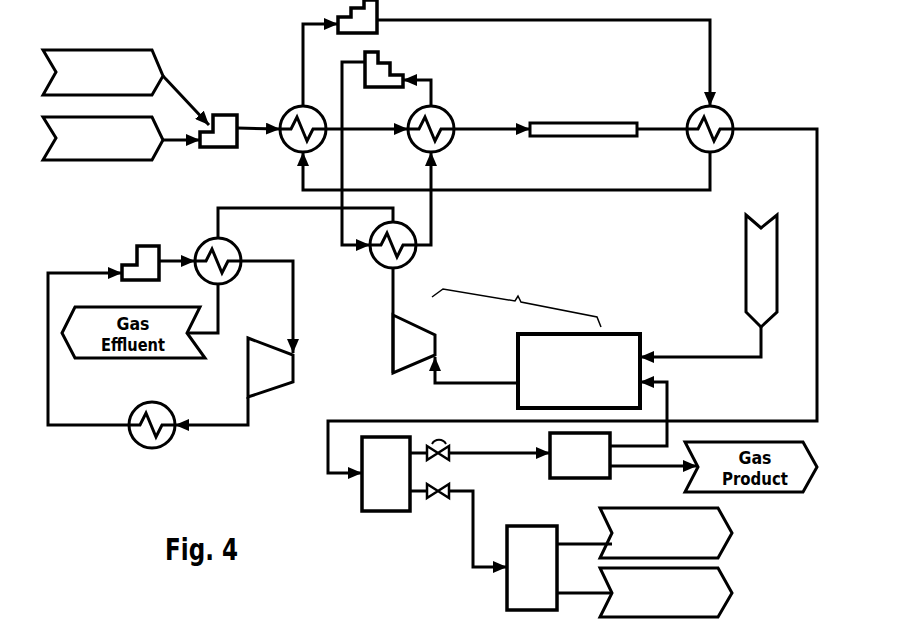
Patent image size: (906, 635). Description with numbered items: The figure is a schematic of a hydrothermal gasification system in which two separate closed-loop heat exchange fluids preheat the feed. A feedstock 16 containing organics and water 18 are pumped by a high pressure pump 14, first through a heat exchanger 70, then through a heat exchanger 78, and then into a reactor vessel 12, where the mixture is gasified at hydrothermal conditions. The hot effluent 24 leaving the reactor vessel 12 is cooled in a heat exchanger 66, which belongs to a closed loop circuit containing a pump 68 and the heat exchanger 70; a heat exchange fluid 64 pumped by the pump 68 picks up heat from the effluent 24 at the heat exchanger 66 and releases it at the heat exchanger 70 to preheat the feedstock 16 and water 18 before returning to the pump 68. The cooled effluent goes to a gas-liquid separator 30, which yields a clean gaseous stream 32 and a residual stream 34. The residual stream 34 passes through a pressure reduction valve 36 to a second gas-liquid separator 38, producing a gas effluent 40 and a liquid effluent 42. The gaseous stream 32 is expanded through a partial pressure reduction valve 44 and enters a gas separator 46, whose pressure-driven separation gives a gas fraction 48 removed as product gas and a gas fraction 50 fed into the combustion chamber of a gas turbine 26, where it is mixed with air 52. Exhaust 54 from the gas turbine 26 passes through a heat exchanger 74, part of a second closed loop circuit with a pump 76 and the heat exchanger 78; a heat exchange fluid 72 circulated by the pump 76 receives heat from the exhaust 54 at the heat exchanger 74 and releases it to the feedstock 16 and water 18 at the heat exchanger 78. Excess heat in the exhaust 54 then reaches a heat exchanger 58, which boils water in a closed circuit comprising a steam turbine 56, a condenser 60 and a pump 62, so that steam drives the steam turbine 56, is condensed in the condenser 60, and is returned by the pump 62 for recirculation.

The reactor vessel 12 is at (562, 122).
The high pressure pump 14 is at (210, 113).
The feedstock 16 is at (87, 85).
The water 18 is at (87, 150).
The effluent 24 is at (800, 128).
The gas turbine 26 is at (536, 339).
The gas-liquid separator 30 is at (362, 496).
The gaseous stream 32 is at (419, 452).
The residual stream 34 is at (420, 500).
The pressure reduction valve 36 is at (450, 500).
The gas-liquid separator 38 is at (507, 594).
The gas effluent 40 is at (735, 527).
The liquid effluent 42 is at (736, 598).
The partial pressure reduction valve 44 is at (450, 460).
The gas separator 46 is at (567, 468).
The gas fraction 48 is at (658, 470).
The gas fraction 50 is at (669, 404).
The air 52 is at (745, 272).
The exhaust 54 is at (392, 300).
The steam turbine 56 is at (280, 380).
The heat exchanger 58 is at (241, 250).
The condenser 60 is at (134, 438).
The pump 62 is at (134, 256).
The heat exchange fluid 64 is at (712, 37).
The heat exchanger 66 is at (727, 113).
The pump 68 is at (380, 8).
The heat exchanger 70 is at (290, 108).
The heat exchange fluid 72 is at (433, 212).
The heat exchanger 74 is at (372, 258).
The pump 76 is at (394, 63).
The heat exchanger 78 is at (452, 114).